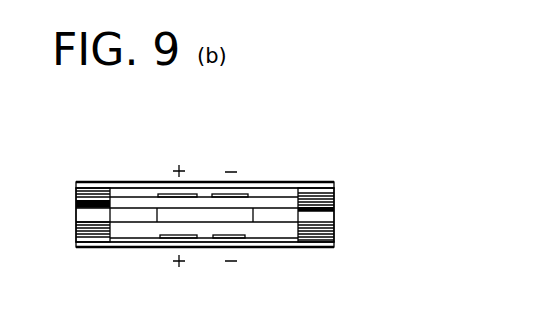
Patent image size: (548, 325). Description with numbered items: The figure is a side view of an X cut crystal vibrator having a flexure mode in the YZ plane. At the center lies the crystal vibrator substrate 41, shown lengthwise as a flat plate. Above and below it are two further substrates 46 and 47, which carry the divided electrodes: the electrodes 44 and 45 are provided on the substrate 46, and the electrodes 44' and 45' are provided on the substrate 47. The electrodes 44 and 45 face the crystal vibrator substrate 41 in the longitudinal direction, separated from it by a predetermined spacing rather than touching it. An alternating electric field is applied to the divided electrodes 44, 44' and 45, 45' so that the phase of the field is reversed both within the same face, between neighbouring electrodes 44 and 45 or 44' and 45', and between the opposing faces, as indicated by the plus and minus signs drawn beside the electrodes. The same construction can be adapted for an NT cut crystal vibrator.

The crystal vibrator substrate 41 is at (327, 219).
The divided electrode 44 is at (184, 158).
The divided electrode 45 is at (247, 158).
The divided electrode 44' is at (171, 271).
The divided electrode 45' is at (226, 271).
The substrate 46 is at (333, 184).
The substrate 47 is at (327, 246).